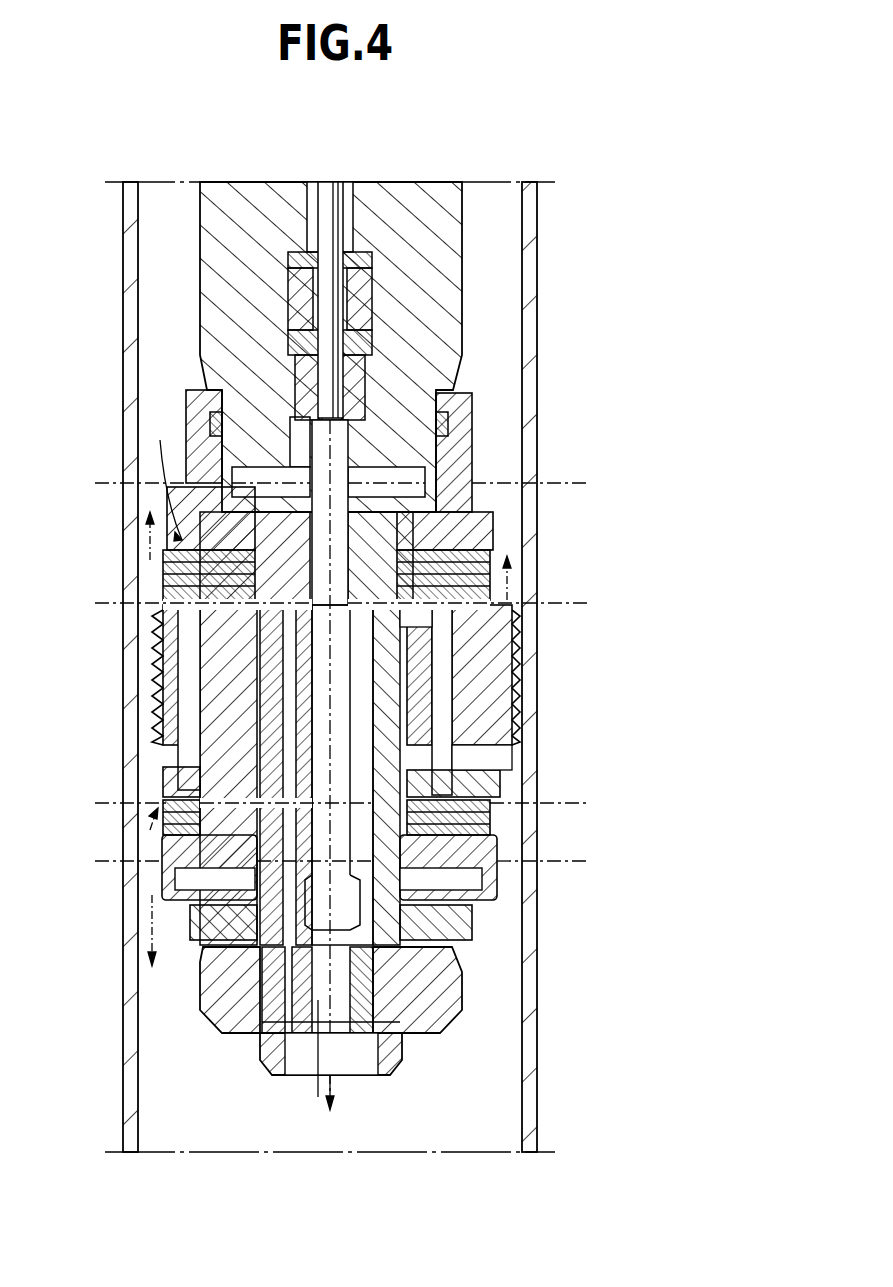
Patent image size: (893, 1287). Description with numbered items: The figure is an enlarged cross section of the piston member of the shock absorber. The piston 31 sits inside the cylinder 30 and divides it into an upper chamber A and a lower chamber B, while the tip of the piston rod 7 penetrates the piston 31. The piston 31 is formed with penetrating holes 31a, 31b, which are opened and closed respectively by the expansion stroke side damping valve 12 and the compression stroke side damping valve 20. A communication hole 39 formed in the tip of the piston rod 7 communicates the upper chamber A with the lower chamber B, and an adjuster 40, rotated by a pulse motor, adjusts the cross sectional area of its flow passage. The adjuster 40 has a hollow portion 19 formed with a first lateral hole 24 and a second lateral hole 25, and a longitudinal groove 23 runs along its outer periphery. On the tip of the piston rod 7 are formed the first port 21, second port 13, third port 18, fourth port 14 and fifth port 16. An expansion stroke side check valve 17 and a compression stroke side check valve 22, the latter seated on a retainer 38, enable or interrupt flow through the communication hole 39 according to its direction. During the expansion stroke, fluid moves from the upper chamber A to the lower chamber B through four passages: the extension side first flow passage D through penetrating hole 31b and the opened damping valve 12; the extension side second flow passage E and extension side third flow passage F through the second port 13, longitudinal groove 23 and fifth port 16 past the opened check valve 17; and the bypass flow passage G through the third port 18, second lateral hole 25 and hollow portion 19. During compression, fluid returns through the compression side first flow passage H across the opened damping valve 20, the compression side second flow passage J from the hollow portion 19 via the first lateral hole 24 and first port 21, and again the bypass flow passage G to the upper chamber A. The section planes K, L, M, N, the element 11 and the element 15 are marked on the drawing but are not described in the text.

The piston rod 7 is at (198, 232).
The cylinder 30 is at (541, 232).
The adjuster 40 is at (350, 450).
The first port 21 is at (472, 440).
The first lateral hole 24 is at (448, 470).
The hollow portion 19 is at (493, 528).
The retainer 38 is at (490, 562).
The third port 18 is at (432, 628).
The piston 31 is at (514, 655).
The penetrating hole 31a is at (152, 684).
The penetrating hole 31b is at (522, 718).
The second lateral hole 25 is at (452, 750).
The extension side first flow passage D is at (512, 758).
The valve seat 11 is at (500, 786).
The expansion stroke side damping valve 12 is at (490, 826).
The expansion stroke side check valve 17 is at (472, 922).
The fifth port 16 is at (202, 978).
The communication hole 39 is at (386, 1072).
The compression stroke side check valve 22 is at (175, 553).
The compression stroke side damping valve 20 is at (165, 585).
The second port 13 is at (262, 645).
The longitudinal groove 23 is at (178, 716).
The fourth port 14 is at (257, 775).
The ring 15 is at (165, 782).
The section line K is at (335, 484).
The section line L is at (331, 604).
The section line M is at (328, 804).
The section line N is at (331, 862).
The upper chamber A is at (177, 335).
The lower chamber B is at (197, 1116).
The compression side second flow passage J is at (167, 475).
The compression side first flow passage H is at (160, 580).
The extension side second flow passage E is at (148, 820).
The extension stroke side third flow passage F is at (150, 940).
The bypass flow passage G is at (336, 1085).